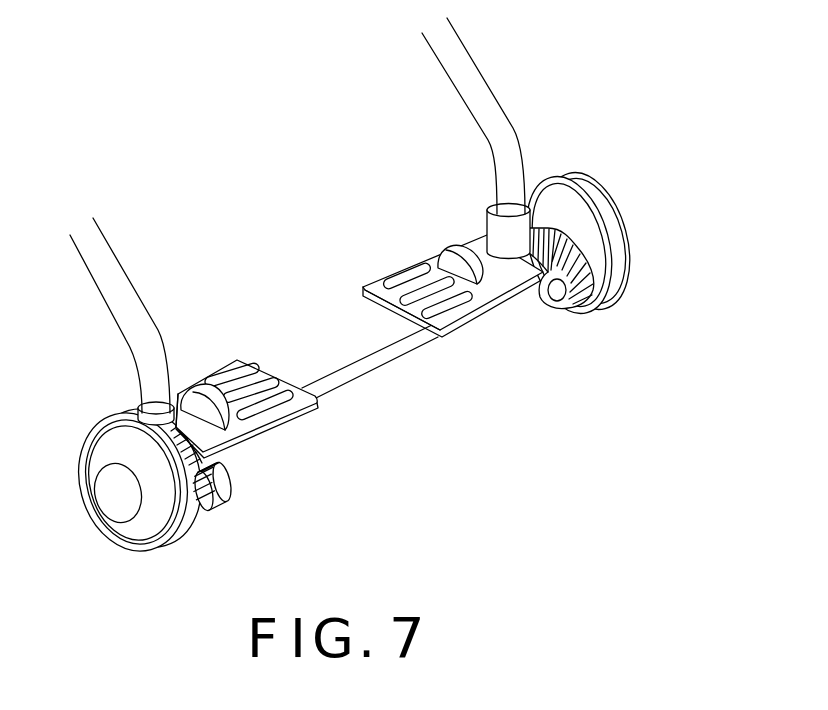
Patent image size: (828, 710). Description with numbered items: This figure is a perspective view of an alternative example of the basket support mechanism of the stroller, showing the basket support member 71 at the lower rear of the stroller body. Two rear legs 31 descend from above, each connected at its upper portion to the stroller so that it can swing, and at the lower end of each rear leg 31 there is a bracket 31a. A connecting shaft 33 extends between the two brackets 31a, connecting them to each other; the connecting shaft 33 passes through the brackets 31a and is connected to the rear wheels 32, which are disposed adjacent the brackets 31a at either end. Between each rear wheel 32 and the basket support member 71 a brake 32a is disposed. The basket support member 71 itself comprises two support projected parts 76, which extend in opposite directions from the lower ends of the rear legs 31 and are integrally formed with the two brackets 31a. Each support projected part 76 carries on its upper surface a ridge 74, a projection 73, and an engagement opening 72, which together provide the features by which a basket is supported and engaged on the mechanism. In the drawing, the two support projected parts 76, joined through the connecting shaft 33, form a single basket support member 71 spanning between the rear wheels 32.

The rear leg 31 is at (497, 0).
The bracket 31a is at (160, 410).
The rear wheel 32 is at (160, 547).
The brake 32a is at (218, 488).
The connecting shaft 33 is at (363, 356).
The basket support member 71 is at (353, 344).
The engagement opening 72 is at (216, 374).
The projection 73 is at (194, 400).
The ridge 74 is at (290, 392).
The support projected part 76 is at (260, 428).